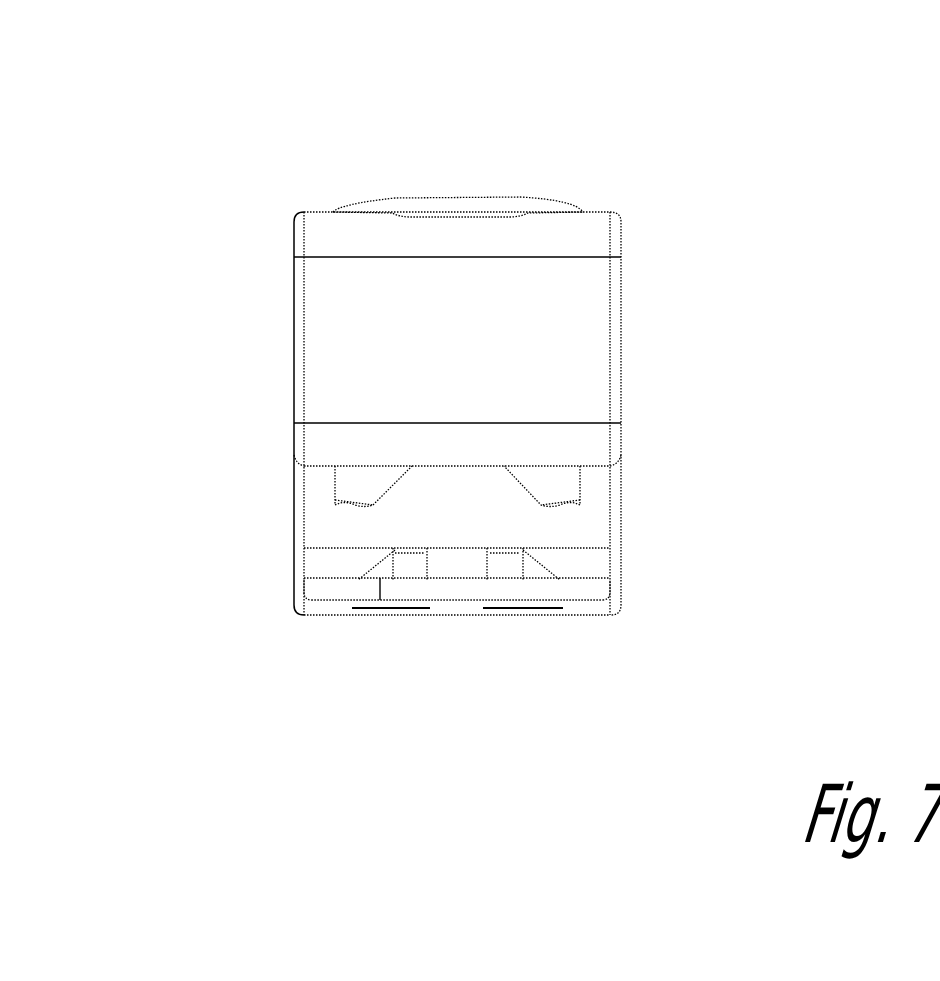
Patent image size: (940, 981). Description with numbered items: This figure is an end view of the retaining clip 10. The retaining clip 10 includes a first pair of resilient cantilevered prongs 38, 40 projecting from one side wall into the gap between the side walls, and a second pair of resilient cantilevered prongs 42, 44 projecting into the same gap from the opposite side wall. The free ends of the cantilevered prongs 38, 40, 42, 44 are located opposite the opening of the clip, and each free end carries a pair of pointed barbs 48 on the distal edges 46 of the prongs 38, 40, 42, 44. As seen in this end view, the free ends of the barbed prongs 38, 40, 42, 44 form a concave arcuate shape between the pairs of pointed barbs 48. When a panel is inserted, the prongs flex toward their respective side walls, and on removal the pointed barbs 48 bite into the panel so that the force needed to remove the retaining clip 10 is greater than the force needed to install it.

The retaining clip 10 is at (533, 135).
The resilient cantilevered prong 38 is at (535, 577).
The resilient cantilevered prong 40 is at (390, 572).
The resilient cantilevered prong 42 is at (559, 481).
The resilient cantilevered prong 44 is at (363, 481).
The distal edge 46 is at (335, 497).
The pointed barb 48 is at (373, 508).